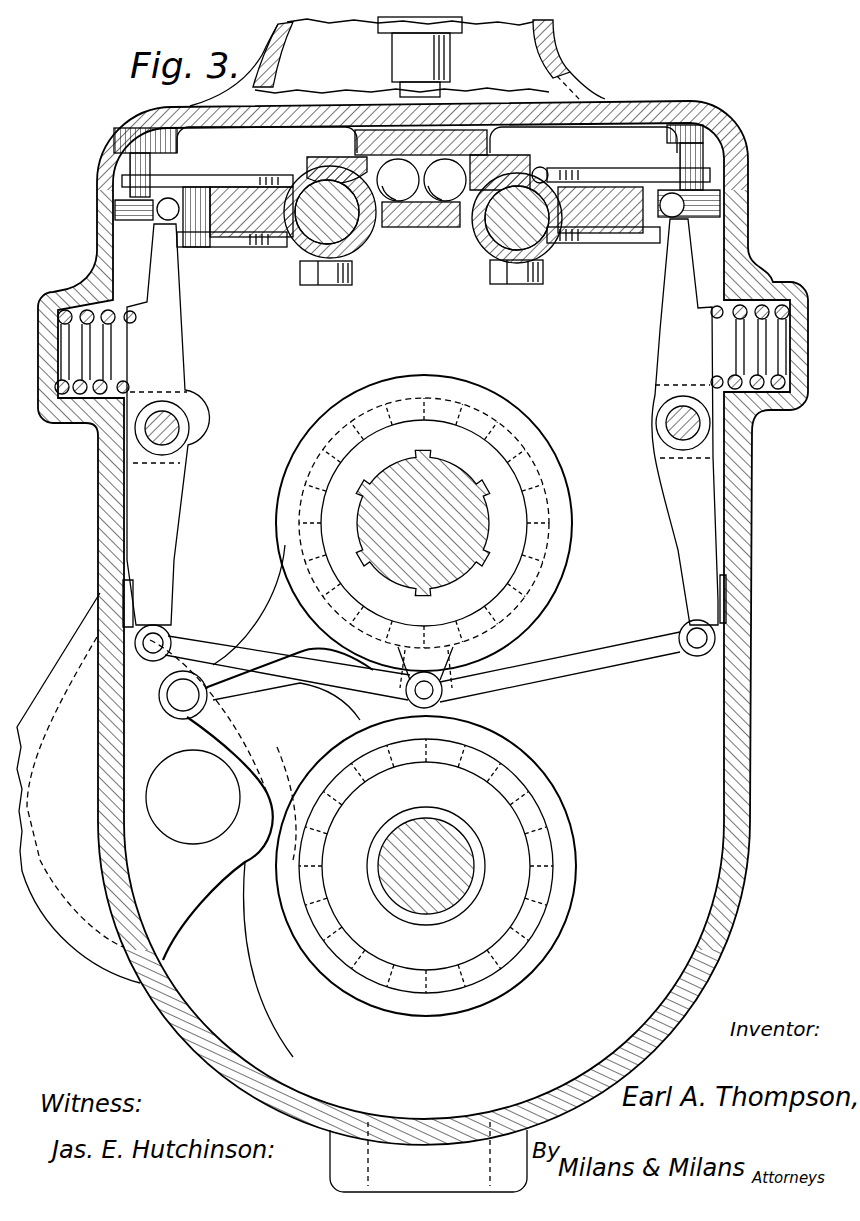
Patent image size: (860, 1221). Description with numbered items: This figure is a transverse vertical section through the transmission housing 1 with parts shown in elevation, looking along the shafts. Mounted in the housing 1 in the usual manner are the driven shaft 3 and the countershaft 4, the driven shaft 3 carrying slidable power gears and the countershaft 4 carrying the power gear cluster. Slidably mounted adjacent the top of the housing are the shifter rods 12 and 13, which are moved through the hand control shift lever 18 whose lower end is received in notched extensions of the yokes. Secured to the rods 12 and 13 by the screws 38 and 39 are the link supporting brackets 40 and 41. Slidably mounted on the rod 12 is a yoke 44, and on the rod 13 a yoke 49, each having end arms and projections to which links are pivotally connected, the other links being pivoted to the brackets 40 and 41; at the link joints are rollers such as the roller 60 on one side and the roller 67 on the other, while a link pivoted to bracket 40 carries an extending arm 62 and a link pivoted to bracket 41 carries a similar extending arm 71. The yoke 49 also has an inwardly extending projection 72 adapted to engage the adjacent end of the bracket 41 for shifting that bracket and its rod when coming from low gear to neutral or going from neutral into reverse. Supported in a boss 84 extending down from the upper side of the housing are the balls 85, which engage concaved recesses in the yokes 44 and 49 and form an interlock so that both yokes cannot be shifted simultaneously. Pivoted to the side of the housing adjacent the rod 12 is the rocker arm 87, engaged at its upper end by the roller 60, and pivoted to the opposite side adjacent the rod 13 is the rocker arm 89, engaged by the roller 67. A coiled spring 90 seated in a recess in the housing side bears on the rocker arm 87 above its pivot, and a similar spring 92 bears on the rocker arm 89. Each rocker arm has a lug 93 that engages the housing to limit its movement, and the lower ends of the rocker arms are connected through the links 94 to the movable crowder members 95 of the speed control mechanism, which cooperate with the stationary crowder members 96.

The transmission housing 1 is at (740, 212).
The driven shaft 3 is at (447, 507).
The countershaft 4 is at (448, 859).
The shifter rod 12 is at (345, 228).
The shifter rod 13 is at (490, 230).
The hand control shift lever 18 is at (440, 52).
The screw 38 is at (326, 281).
The screw 39 is at (516, 283).
The link supporting bracket 40 is at (300, 236).
The link supporting bracket 41 is at (488, 240).
The yoke 44 is at (327, 147).
The yoke 49 is at (532, 162).
The roller 60 is at (200, 228).
The extending arm 62 is at (240, 180).
The roller 67 is at (645, 220).
The extending arm 71 is at (620, 157).
The inwardly extending projection 72 is at (442, 230).
The boss 84 is at (484, 138).
The balls 85 is at (402, 202).
The rocker arm 87 is at (180, 378).
The rocker arm 89 is at (672, 372).
The coiled spring 90 is at (80, 392).
The spring 92 is at (770, 306).
The lug 93 is at (133, 607).
The links 94 is at (583, 660).
The movable crowder members 95 is at (540, 513).
The stationary crowder members 96 is at (282, 590).